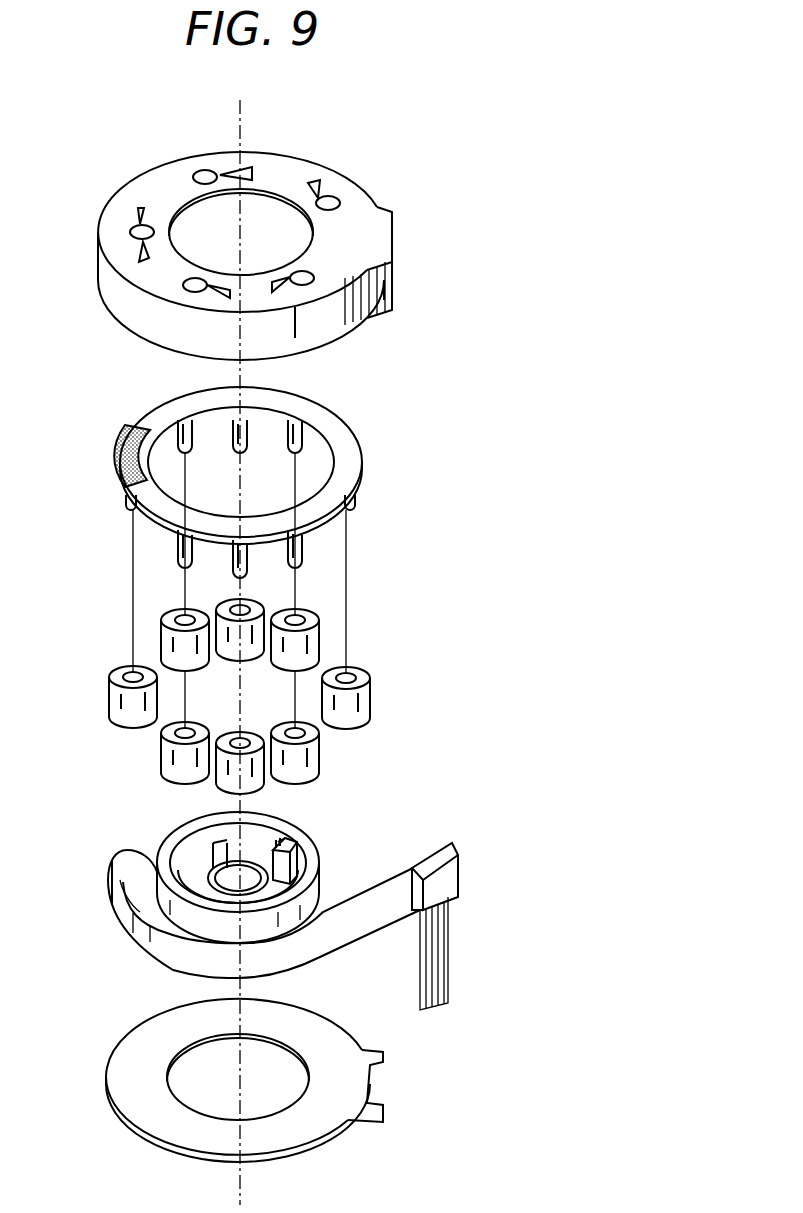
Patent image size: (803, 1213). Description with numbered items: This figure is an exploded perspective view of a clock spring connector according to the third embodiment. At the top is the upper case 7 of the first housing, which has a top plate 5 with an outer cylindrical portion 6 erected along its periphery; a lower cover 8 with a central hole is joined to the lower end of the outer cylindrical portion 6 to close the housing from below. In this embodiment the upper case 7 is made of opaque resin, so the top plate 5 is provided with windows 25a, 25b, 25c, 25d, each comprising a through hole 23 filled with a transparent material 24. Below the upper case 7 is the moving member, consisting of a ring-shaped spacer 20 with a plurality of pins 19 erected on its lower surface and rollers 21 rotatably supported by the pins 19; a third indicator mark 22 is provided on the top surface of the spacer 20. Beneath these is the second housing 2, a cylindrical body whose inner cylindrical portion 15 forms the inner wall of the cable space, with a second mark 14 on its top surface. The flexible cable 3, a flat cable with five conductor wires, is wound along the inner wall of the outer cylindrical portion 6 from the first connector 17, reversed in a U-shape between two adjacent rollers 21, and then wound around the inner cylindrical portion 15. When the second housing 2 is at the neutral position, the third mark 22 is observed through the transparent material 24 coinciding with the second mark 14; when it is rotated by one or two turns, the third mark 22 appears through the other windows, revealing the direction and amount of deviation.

The second housing 2 is at (328, 820).
The flexible cable 3 is at (128, 940).
The top plate 5 is at (170, 175).
The outer cylindrical portion 6 is at (120, 302).
The upper case 7 is at (355, 202).
The lower cover 8 is at (133, 1133).
The second mark 14 is at (190, 858).
The inner cylindrical portion 15 is at (323, 857).
The first connector 17 is at (465, 868).
The pins 19 is at (177, 545).
The spacer 20 is at (340, 436).
The rollers 21 is at (112, 705).
The third indicator mark 22 is at (120, 458).
The through hole 23 is at (135, 228).
The transparent material 24 is at (128, 228).
The window 25a is at (205, 172).
The window 25b is at (330, 198).
The window 25c is at (313, 272).
The window 25d is at (180, 283).